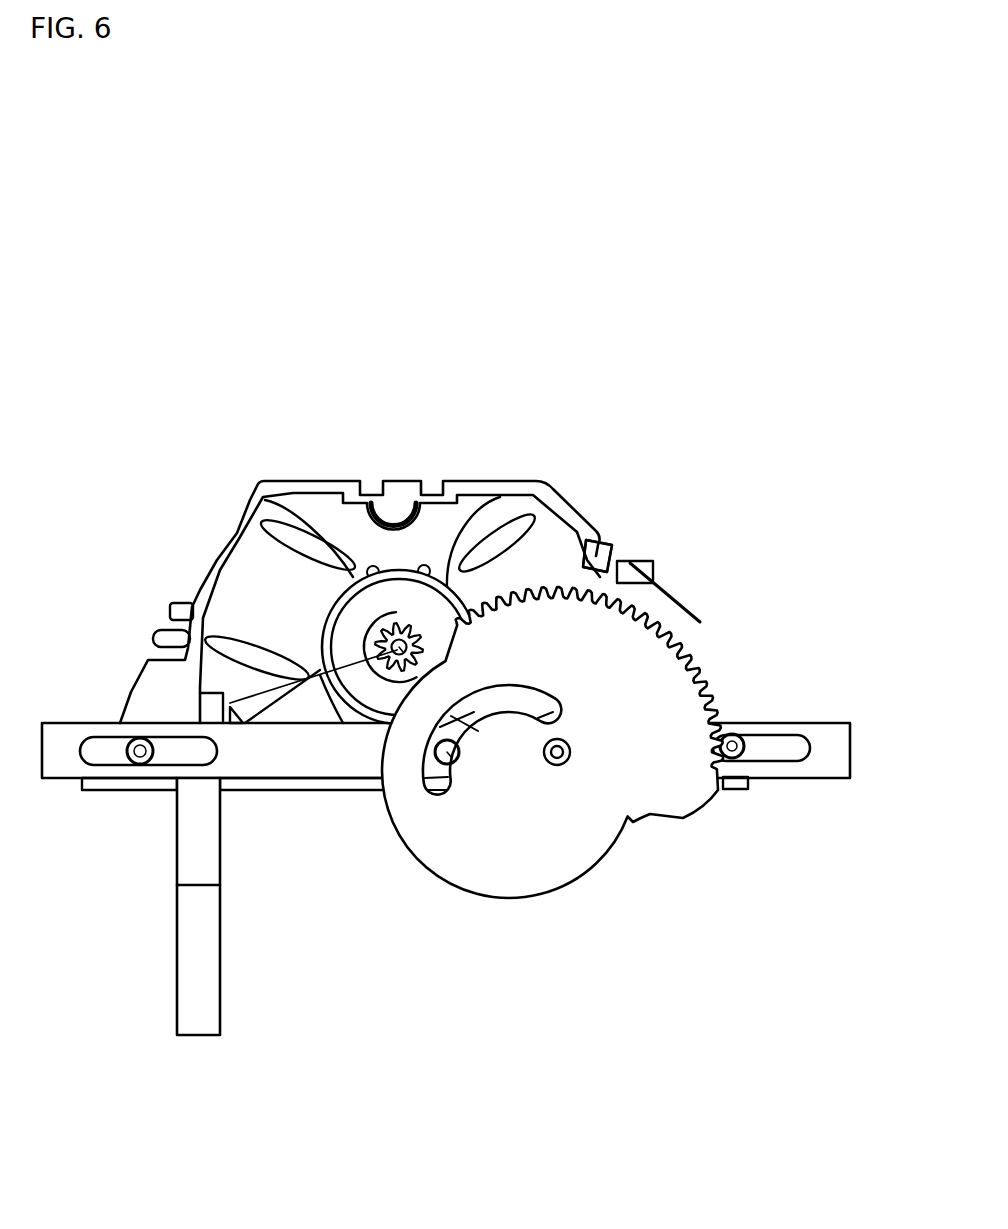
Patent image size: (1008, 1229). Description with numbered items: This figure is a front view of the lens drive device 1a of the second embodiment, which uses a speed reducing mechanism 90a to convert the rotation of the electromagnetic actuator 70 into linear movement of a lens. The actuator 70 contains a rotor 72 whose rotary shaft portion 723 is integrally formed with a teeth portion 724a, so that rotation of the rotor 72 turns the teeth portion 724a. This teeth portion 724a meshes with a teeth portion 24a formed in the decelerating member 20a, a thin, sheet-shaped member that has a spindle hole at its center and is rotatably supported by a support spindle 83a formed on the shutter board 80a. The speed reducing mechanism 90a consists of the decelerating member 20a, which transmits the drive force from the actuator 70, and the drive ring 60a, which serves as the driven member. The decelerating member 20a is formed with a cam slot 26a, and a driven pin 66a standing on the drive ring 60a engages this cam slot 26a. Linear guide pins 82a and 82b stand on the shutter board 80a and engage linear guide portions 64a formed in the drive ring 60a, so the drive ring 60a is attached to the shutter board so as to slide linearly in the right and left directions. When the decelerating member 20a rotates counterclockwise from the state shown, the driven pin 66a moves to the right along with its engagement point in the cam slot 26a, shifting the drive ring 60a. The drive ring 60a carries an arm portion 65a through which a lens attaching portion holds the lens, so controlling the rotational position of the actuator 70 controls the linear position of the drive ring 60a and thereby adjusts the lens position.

The lens drive device 1a is at (630, 374).
The electromagnetic actuator 70 is at (240, 597).
The rotor 72 is at (397, 598).
The teeth portion 724a is at (304, 725).
The rotary shaft portion 723 is at (397, 652).
The cam slot 26a is at (503, 690).
The shutter board 80a is at (563, 510).
The teeth portion 24a is at (655, 607).
The decelerating member 20a is at (663, 645).
The speed reducing mechanism 90a is at (818, 548).
The drive ring 60a is at (818, 732).
The linear guide pin 82a is at (140, 752).
The linear guide pin 82b is at (733, 770).
The linear guide portion 64a is at (178, 737).
The arm portion 65a is at (212, 865).
The driven pin 66a is at (449, 754).
The support spindle 83a is at (561, 758).